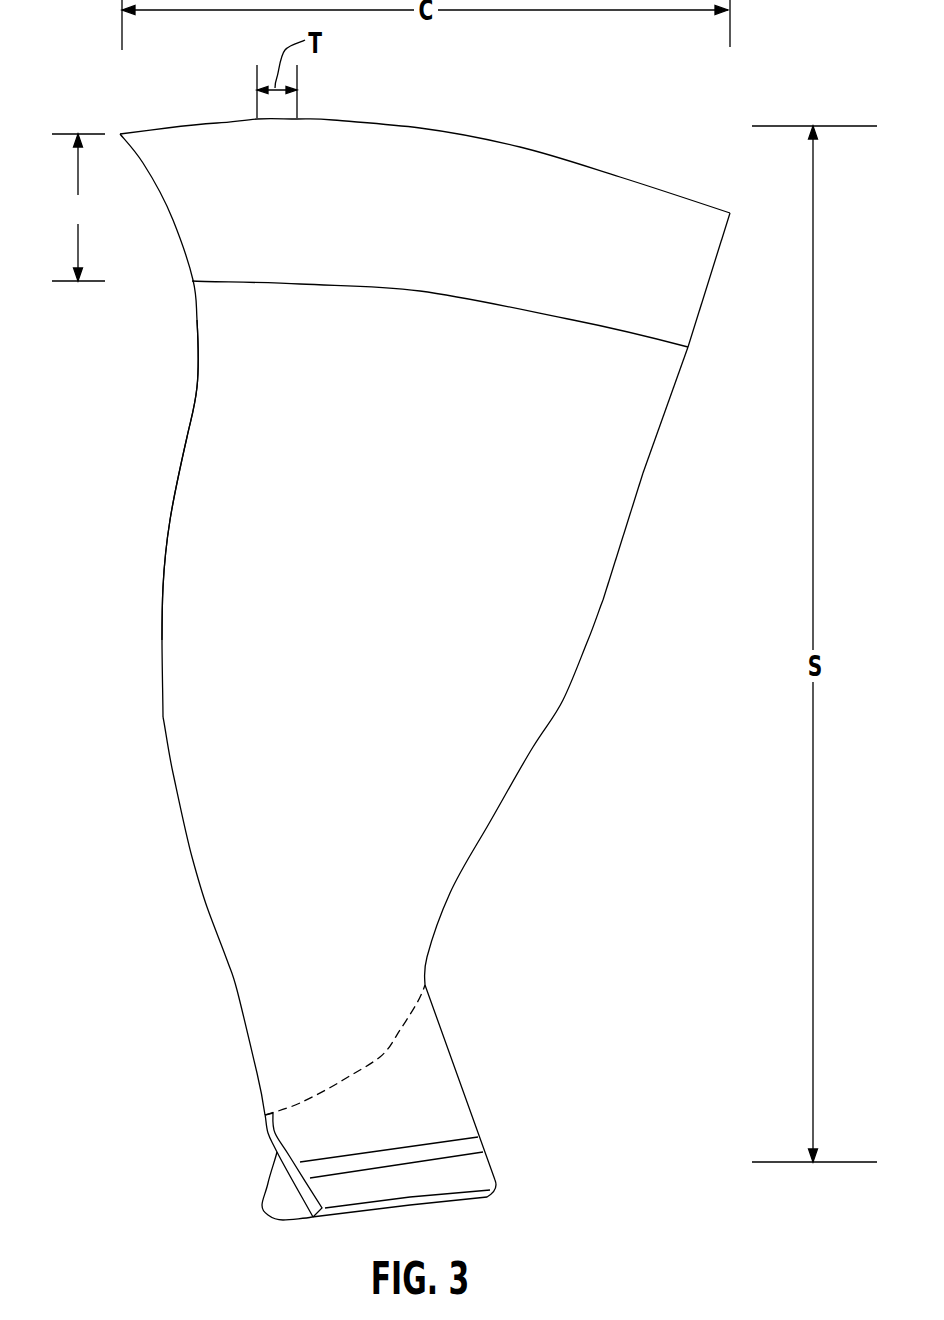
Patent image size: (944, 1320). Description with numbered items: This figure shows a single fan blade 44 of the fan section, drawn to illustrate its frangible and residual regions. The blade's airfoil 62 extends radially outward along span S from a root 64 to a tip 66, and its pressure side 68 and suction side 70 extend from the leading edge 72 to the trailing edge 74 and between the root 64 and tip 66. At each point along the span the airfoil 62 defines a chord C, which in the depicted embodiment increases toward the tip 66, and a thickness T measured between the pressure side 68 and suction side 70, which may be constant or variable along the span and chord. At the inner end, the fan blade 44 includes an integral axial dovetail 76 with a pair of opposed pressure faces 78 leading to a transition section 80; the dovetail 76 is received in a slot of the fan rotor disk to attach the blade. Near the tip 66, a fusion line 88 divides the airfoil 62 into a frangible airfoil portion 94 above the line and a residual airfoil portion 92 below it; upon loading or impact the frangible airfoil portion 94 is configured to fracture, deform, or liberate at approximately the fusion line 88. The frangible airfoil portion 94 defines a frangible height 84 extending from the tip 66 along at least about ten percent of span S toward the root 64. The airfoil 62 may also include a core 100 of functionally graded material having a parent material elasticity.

The fan blade 44 is at (578, 118).
The airfoil 62 is at (224, 833).
The root 64 is at (370, 1050).
The tip 66 is at (435, 127).
The pressure side 68 is at (377, 509).
The suction side 70 is at (283, 568).
The leading edge 72 is at (160, 717).
The trailing edge 74 is at (605, 600).
The axial dovetail 76 is at (290, 1203).
The pressure faces 78 is at (275, 1168).
The transition section 80 is at (397, 1102).
The frangible height 84 is at (78, 207).
The fusion line 88 is at (338, 283).
The residual airfoil portion 92 is at (622, 477).
The frangible airfoil portion 94 is at (692, 285).
The core 100 is at (537, 693).